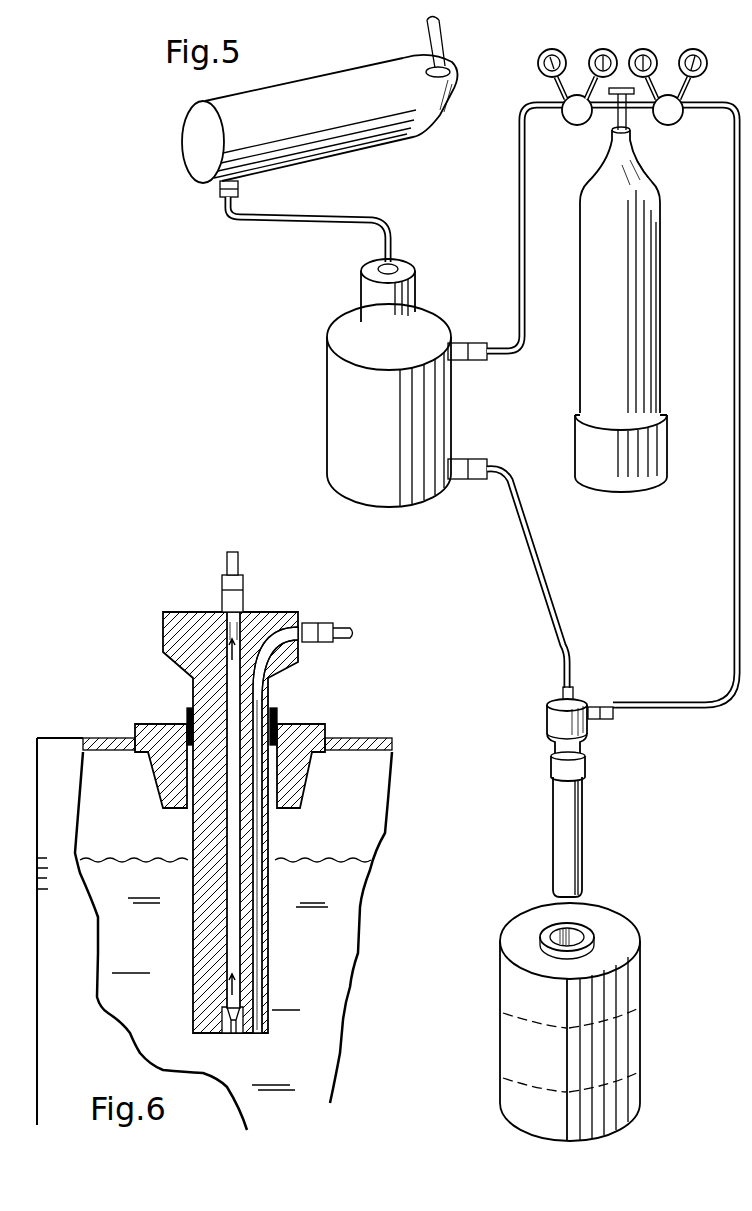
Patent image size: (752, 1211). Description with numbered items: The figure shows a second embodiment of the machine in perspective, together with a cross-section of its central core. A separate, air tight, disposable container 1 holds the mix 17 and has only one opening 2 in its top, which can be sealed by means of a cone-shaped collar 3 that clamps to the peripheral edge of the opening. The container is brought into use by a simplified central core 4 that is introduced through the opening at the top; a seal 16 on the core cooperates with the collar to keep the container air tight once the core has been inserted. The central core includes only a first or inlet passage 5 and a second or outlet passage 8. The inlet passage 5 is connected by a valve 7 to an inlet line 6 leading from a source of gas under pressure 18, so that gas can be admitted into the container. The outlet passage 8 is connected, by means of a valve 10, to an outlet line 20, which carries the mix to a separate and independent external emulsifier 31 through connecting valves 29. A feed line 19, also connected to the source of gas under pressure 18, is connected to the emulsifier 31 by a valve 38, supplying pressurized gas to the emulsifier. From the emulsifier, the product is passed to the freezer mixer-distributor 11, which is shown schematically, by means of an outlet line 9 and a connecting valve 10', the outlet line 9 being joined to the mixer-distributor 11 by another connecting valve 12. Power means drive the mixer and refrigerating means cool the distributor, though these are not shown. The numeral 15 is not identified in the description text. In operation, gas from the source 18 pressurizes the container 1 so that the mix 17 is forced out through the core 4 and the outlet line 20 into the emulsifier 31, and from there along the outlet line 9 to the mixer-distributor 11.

In FIG. 5, the container 1 is at (620, 992).
In FIG. 5, the opening 2 is at (580, 935).
In FIG. 6, the collar 3 is at (150, 722).
In FIG. 5, the central core 4 is at (578, 865).
In FIG. 6, the central core 4 is at (268, 917).
In FIG. 6, the inlet passage 5 is at (258, 1003).
In FIG. 5, the inlet line 6 is at (667, 702).
In FIG. 6, the inlet line 6 is at (348, 628).
In FIG. 5, the valve 7 is at (606, 718).
In FIG. 6, the valve 7 is at (312, 622).
In FIG. 6, the outlet passage 8 is at (235, 945).
In FIG. 5, the outlet line 9 is at (312, 220).
In FIG. 5, the valve 10 is at (530, 709).
In FIG. 6, the valve 10 is at (185, 572).
In FIG. 5, the connecting valve 10' is at (418, 267).
In FIG. 5, the freezer mixer-distributor 11 is at (195, 175).
In FIG. 5, the connecting valve 12 is at (240, 190).
In FIG. 6, the molten metal bath 15 is at (128, 832).
In FIG. 5, the seal 16 is at (560, 768).
In FIG. 6, the seal 16 is at (278, 715).
In FIG. 6, the mix 17 is at (248, 1080).
In FIG. 5, the source of gas under pressure 18 is at (613, 465).
In FIG. 5, the feed line 19 is at (520, 185).
In FIG. 5, the outlet line 20 is at (548, 610).
In FIG. 6, the outlet line 20 is at (228, 560).
In FIG. 5, the connecting valves 29 is at (462, 480).
In FIG. 5, the emulsifier 31 is at (335, 382).
In FIG. 5, the valve 38 is at (463, 343).